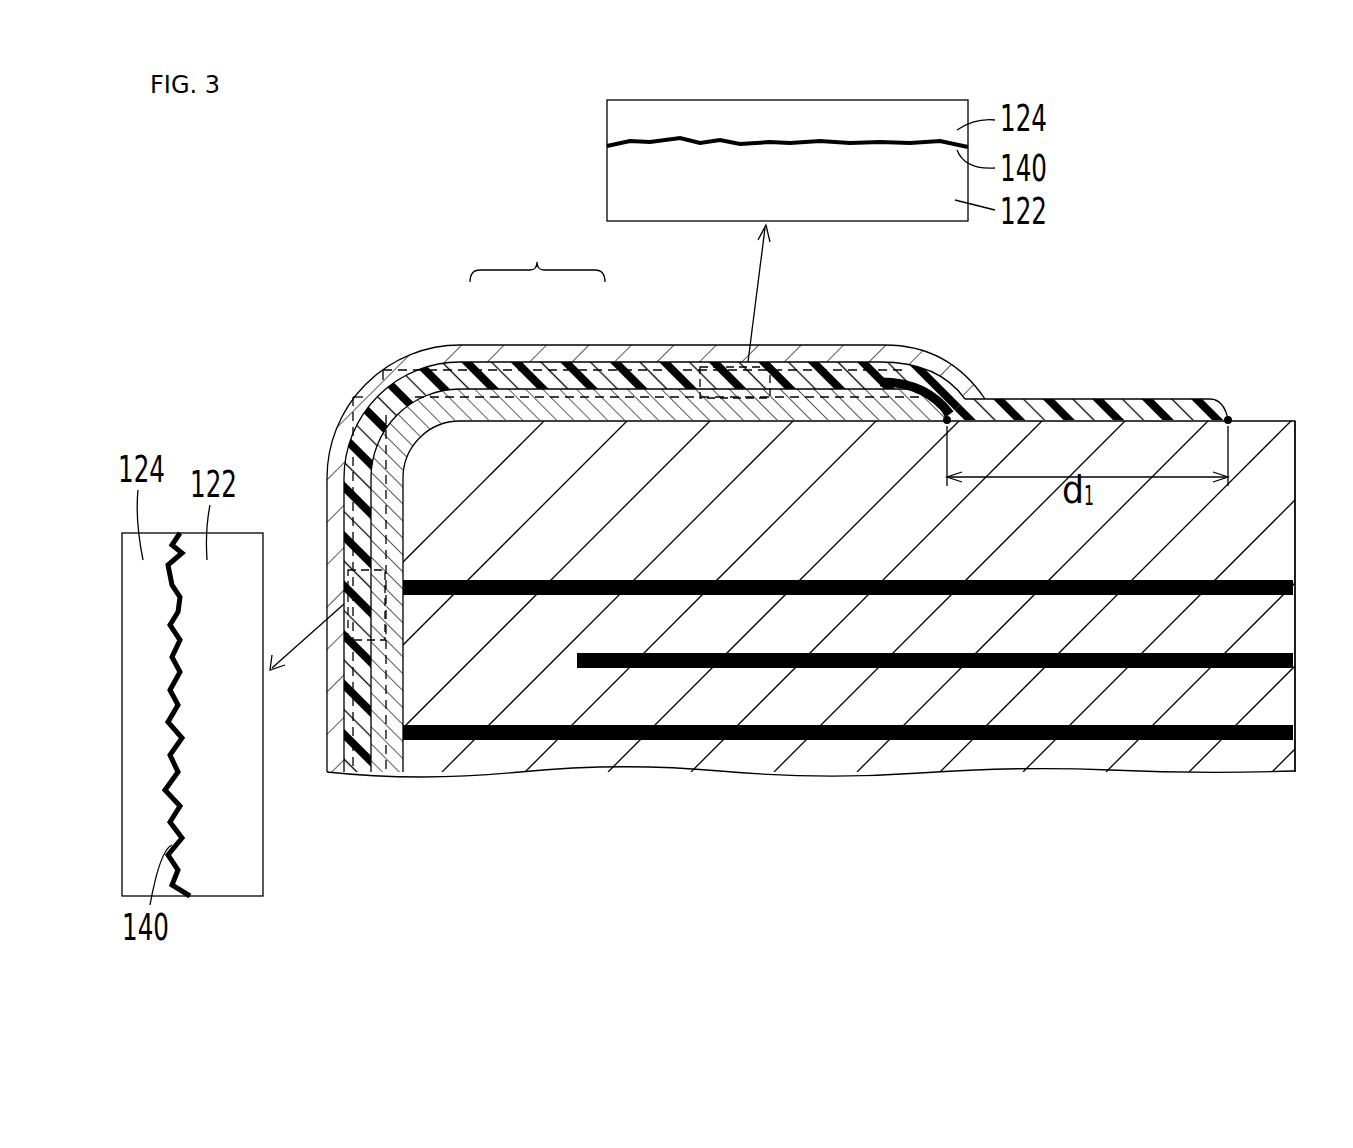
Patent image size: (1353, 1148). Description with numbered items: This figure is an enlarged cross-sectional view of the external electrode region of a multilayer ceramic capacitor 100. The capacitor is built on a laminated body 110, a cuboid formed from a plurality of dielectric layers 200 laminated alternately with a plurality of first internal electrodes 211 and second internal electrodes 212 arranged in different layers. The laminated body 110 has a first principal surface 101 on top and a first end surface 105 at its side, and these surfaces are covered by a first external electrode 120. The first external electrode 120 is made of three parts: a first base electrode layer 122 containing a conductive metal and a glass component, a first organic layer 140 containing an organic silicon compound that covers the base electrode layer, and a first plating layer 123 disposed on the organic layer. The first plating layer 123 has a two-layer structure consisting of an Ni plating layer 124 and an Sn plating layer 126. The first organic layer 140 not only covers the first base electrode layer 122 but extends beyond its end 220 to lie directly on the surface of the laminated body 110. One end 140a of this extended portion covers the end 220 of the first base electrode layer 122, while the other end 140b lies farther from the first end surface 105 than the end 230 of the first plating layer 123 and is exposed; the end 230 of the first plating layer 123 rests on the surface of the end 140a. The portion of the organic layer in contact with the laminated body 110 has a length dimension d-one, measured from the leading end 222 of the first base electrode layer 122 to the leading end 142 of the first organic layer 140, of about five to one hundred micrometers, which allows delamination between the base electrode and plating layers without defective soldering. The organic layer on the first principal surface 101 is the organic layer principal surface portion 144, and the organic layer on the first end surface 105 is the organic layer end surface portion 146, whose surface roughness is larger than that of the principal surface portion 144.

The multilayer ceramic capacitor 100 is at (414, 286).
The first principal surface 101 is at (1264, 418).
The first end surface 105 is at (403, 512).
The laminated body 110 is at (552, 772).
The first external electrode 120 is at (656, 494).
The first base electrode layer 122 is at (833, 405).
The first plating layer 123 is at (537, 249).
The Ni plating layer 124 is at (572, 352).
The Sn plating layer 126 is at (496, 350).
The first organic layer 140 is at (1068, 398).
The one end of the first organic layer 140a is at (973, 398).
The other end of the first organic layer 140b is at (1212, 408).
The leading end of the first organic layer 142 is at (1228, 417).
The organic layer principal surface portion 144 is at (428, 358).
The organic layer end surface portion 146 is at (352, 443).
The dielectric layers 200 is at (645, 760).
The first internal electrodes 211 is at (731, 596).
The second internal electrodes 212 is at (892, 669).
The end of the first base electrode layer 220 is at (918, 408).
The leading end of the first base electrode layer 222 is at (944, 424).
The end of the first plating layer 230 is at (947, 377).